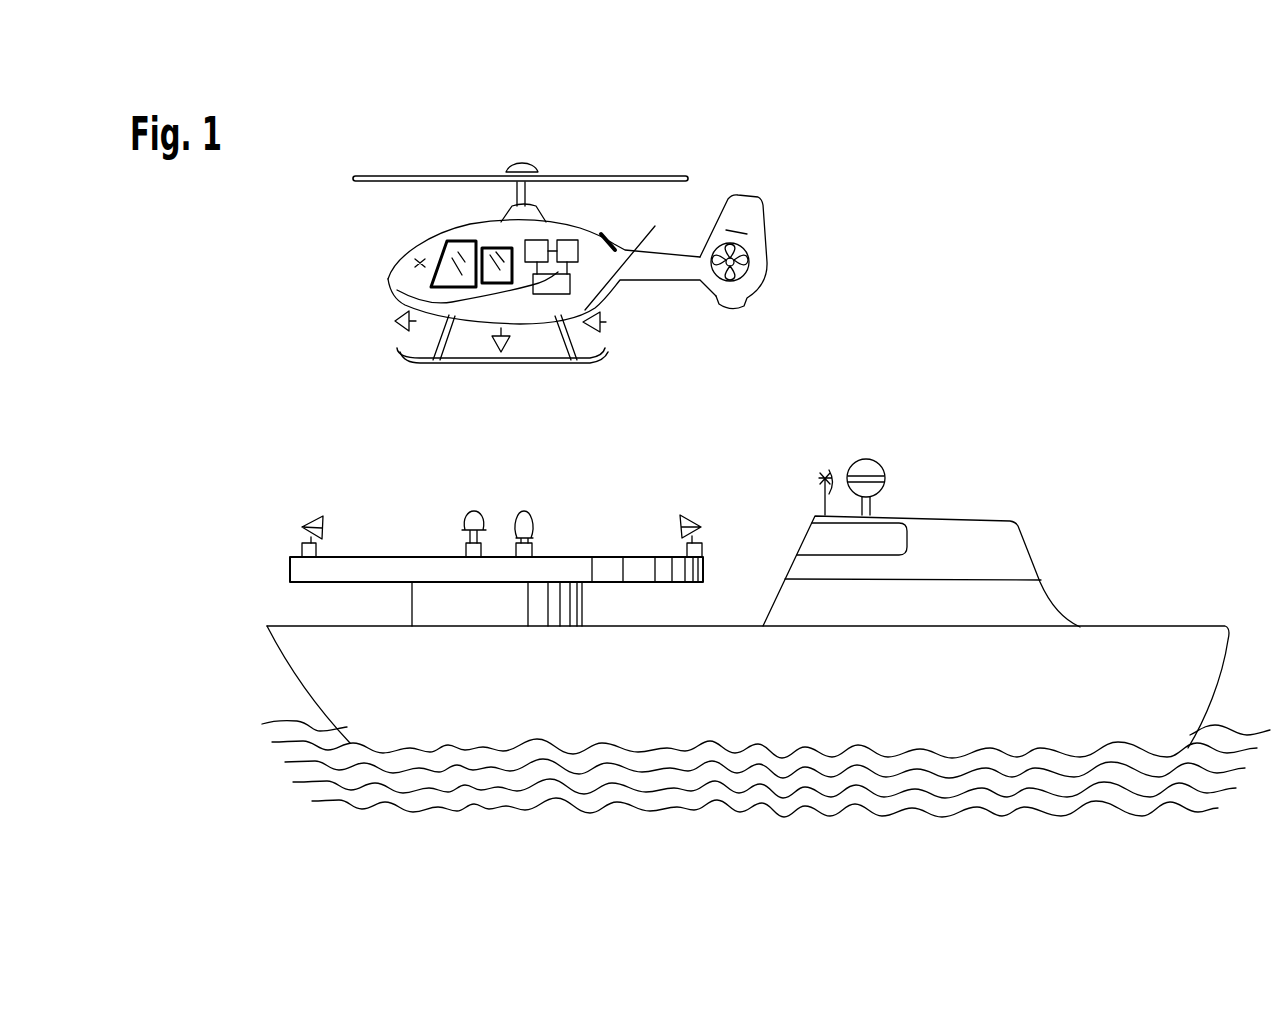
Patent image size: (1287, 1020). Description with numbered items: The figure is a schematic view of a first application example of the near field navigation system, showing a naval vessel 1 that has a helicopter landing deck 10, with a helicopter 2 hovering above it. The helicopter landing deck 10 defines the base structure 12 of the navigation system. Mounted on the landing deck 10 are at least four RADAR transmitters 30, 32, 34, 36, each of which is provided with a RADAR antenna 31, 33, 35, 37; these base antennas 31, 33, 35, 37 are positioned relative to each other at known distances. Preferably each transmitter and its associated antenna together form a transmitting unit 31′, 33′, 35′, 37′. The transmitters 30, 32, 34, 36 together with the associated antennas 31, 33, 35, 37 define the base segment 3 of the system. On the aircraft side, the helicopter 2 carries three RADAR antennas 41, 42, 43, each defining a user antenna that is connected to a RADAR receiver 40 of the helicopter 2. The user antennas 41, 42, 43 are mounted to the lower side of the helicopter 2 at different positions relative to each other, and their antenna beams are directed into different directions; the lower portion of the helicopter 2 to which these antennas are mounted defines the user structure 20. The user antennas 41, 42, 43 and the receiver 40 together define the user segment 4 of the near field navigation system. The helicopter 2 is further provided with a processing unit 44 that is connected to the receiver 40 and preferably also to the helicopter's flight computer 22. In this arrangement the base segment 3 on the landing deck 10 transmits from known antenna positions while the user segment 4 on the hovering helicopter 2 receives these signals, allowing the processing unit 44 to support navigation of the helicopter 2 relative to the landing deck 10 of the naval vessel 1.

The naval vessel 1 is at (1033, 482).
The helicopter 2 is at (728, 160).
The base segment 3 is at (325, 462).
The user segment 4 is at (630, 382).
The helicopter landing deck 10 is at (733, 537).
The base structure 12 is at (703, 473).
The user structure 20 is at (618, 288).
The flight computer 22 is at (525, 247).
The RADAR receiver 40 is at (578, 279).
The RADAR antenna (user antenna) 41 is at (392, 321).
The RADAR antenna (user antenna) 42 is at (495, 356).
The RADAR antenna (user antenna) 43 is at (604, 323).
The processing unit 44 is at (567, 240).
The RADAR transmitter 30 is at (302, 550).
The RADAR antenna (base antenna) 31 is at (314, 513).
The transmitting unit 31′ is at (270, 499).
The RADAR transmitter 32 is at (533, 550).
The RADAR antenna (base antenna) 33 is at (534, 522).
The transmitting unit 33′ is at (534, 488).
The RADAR transmitter 34 is at (688, 550).
The RADAR antenna (base antenna) 35 is at (679, 520).
The transmitting unit 35′ is at (720, 505).
The RADAR transmitter 36 is at (465, 550).
The RADAR antenna (base antenna) 37 is at (461, 522).
The transmitting unit 37′ is at (457, 488).